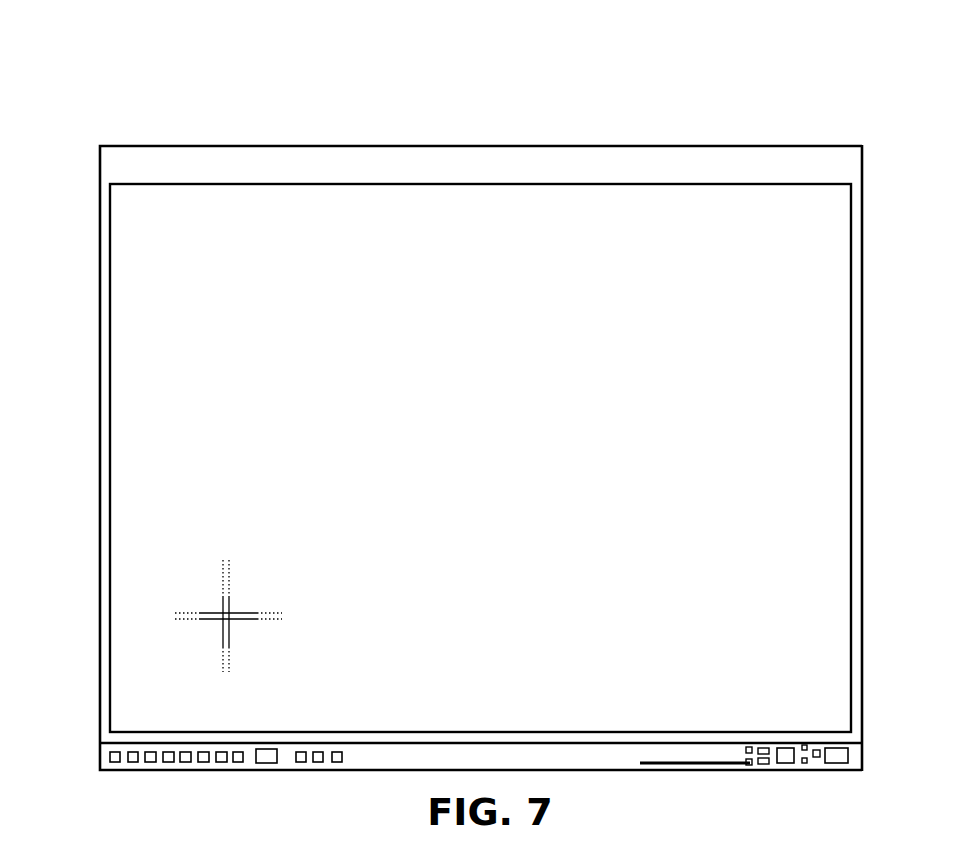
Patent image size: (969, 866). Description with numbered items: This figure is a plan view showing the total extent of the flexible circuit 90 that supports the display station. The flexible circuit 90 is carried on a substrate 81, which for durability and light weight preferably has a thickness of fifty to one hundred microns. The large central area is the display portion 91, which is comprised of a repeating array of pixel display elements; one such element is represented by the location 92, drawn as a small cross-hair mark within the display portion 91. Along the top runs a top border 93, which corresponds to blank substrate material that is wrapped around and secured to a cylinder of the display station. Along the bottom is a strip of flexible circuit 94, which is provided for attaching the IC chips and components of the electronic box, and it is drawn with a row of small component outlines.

The flexible circuit 90 is at (262, 126).
The top border 93 is at (100, 172).
The substrate 81 is at (862, 417).
The display portion 91 is at (123, 419).
The location 92 is at (243, 599).
The strip of flexible circuit 94 is at (99, 759).